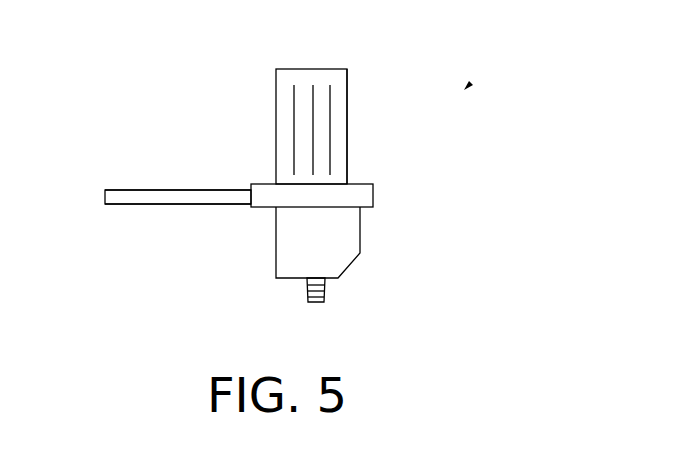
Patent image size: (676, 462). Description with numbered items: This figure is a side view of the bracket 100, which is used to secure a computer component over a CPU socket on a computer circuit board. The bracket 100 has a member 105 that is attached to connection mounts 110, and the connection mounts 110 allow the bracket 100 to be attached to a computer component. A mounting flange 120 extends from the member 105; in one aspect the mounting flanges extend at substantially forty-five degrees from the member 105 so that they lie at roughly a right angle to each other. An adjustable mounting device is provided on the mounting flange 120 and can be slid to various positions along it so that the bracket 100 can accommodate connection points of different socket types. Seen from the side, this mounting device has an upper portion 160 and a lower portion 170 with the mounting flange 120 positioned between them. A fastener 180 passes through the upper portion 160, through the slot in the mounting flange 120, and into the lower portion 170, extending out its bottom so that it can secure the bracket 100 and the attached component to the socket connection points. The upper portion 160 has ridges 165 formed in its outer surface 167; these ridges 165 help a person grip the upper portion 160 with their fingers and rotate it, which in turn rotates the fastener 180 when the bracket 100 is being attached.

The bracket 100 is at (471, 83).
The member 105 is at (203, 190).
The connection mounts 110 is at (120, 190).
The mounting flange 120 is at (237, 205).
The upper portion 160 is at (347, 91).
The ridges 165 is at (313, 100).
The outer surface 167 is at (337, 143).
The lower portion 170 is at (349, 237).
The fastener 180 is at (317, 303).